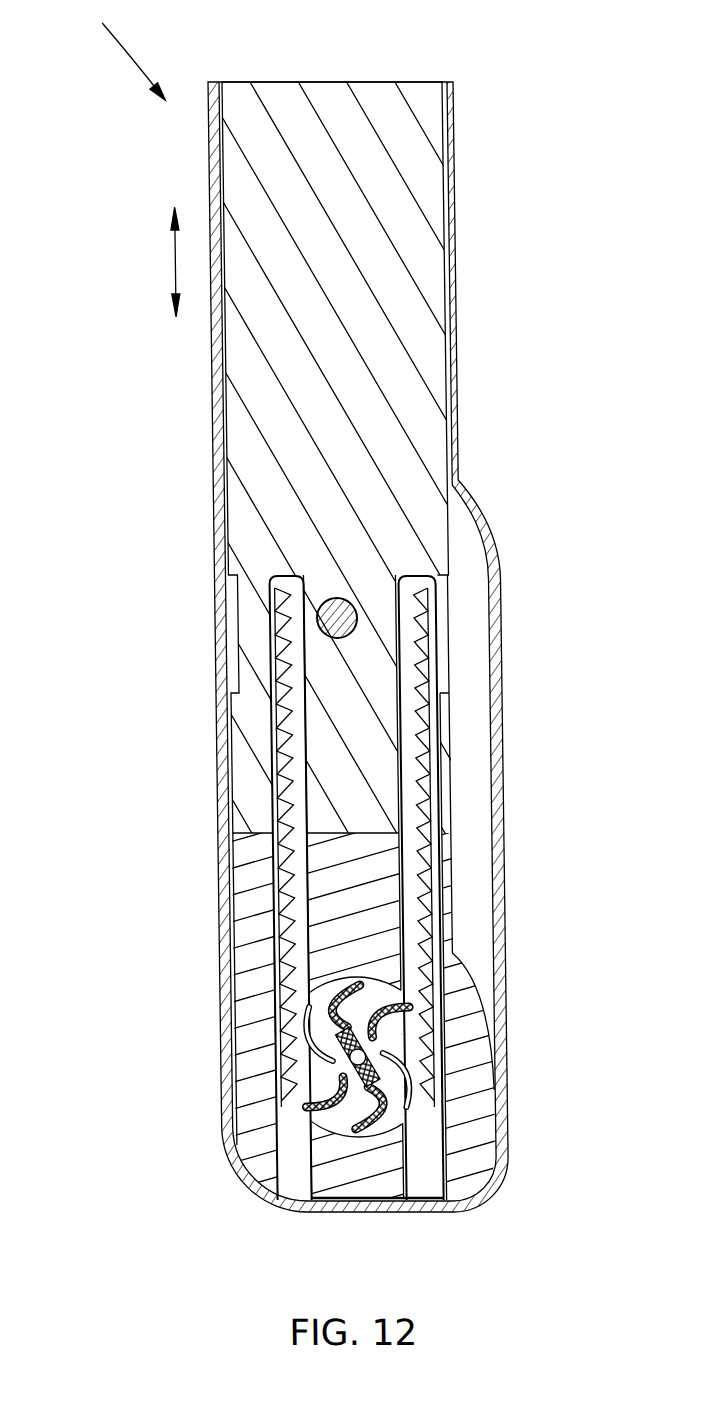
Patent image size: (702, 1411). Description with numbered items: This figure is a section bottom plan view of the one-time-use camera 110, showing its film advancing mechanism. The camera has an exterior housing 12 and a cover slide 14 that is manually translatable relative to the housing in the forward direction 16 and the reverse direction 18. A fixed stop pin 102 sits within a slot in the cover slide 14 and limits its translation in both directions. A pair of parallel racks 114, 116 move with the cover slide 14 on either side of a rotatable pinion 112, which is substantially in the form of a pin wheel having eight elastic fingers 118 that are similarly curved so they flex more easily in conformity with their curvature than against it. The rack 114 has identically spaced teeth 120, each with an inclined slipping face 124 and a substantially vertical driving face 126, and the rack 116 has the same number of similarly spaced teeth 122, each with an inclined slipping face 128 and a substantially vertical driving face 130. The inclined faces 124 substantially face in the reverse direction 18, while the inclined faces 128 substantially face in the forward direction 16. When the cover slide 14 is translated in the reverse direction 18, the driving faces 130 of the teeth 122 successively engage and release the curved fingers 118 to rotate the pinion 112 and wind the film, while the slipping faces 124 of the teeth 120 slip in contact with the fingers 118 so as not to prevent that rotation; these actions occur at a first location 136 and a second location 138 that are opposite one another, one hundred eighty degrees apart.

The one-time-use camera 110 is at (113, 50).
The exterior housing 12 is at (282, 87).
The cover slide 14 is at (486, 520).
The forward direction 16 is at (172, 305).
The reverse direction 18 is at (173, 222).
The fixed stop pin 102 is at (316, 603).
The rack 114 is at (284, 730).
The rack 116 is at (416, 650).
The teeth 120 is at (277, 812).
The teeth 122 is at (424, 777).
The inclined slipping face 124 is at (285, 967).
The driving face 126 is at (271, 1018).
The inclined slipping face 128 is at (428, 1120).
The driving face 130 is at (427, 1073).
The first location 136 is at (421, 1045).
The second location 138 is at (240, 1050).
The rotatable pinion 112 is at (276, 1066).
The elastic fingers 118 is at (342, 1137).